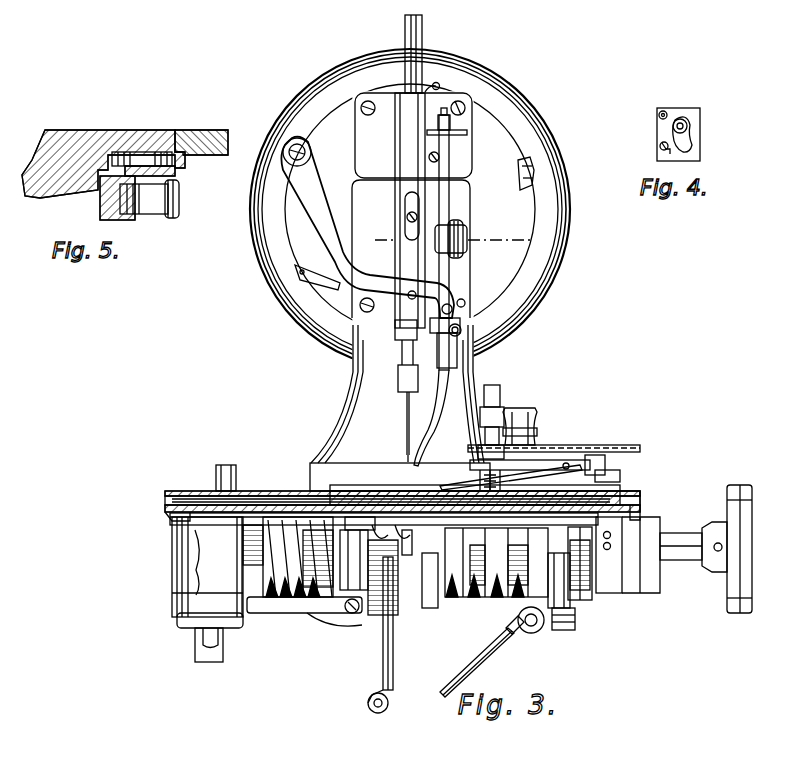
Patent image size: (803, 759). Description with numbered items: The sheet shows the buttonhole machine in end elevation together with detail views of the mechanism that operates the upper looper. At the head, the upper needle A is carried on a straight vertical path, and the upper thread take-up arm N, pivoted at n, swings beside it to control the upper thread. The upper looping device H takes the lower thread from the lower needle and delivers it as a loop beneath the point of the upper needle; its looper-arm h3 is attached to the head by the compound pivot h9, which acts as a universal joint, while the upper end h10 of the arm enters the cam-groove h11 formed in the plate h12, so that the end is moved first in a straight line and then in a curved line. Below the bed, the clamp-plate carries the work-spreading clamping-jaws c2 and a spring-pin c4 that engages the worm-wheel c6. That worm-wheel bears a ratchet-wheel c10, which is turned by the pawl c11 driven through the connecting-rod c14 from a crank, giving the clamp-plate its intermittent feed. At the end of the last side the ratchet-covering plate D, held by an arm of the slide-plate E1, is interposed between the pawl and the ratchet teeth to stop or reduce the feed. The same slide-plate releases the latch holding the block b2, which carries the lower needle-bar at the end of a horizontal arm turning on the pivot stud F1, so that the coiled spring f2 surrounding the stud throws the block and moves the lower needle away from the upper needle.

In FIG. 3, the take-up arm N is at (548, 300).
In FIG. 3, the take-up pivot n is at (287, 140).
In FIG. 3, the upper needle A is at (400, 391).
In FIG. 3, the upper looping device H is at (432, 432).
In FIG. 3, the looper-arm h3 is at (450, 278).
In FIG. 3, the compound pivot h9 is at (468, 240).
In FIG. 5, the compound pivot h9 is at (155, 212).
In FIG. 3, the upper end of looper-arm h10 is at (453, 146).
In FIG. 4, the upper end of looper-arm h10 is at (686, 124).
In FIG. 4, the cam-groove h11 is at (693, 143).
In FIG. 3, the plate h12 is at (462, 130).
In FIG. 4, the plate h12 is at (690, 160).
In FIG. 3, the slide-plate E1 is at (228, 463).
In FIG. 3, the pivot stud F1 is at (278, 616).
In FIG. 3, the spring f2 is at (185, 640).
In FIG. 3, the block b2 is at (385, 660).
In FIG. 3, the work-spreading clamping-jaws c2 is at (445, 486).
In FIG. 3, the spring-pin c4 is at (538, 428).
In FIG. 3, the worm-wheel c6 is at (525, 611).
In FIG. 3, the ratchet-wheel c10 is at (570, 568).
In FIG. 3, the pawl c11 is at (580, 610).
In FIG. 3, the connecting-rod c14 is at (480, 670).
In FIG. 3, the ratchet-covering plate D is at (616, 574).